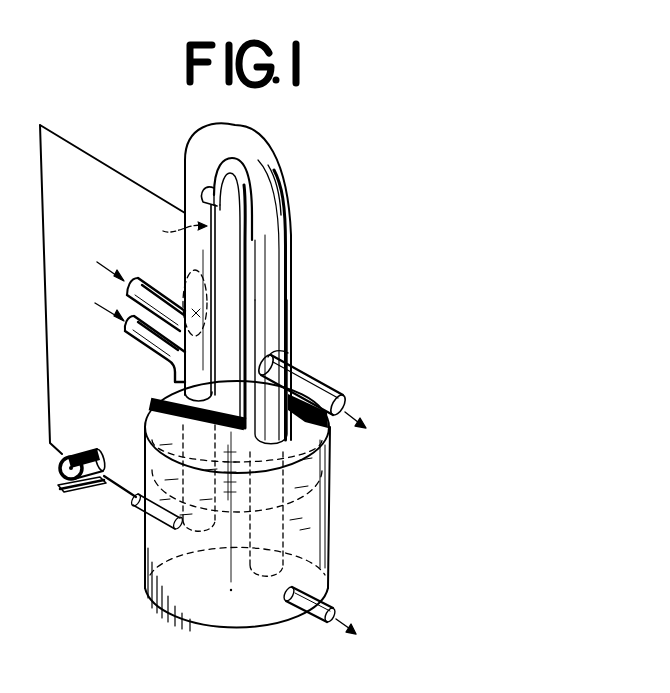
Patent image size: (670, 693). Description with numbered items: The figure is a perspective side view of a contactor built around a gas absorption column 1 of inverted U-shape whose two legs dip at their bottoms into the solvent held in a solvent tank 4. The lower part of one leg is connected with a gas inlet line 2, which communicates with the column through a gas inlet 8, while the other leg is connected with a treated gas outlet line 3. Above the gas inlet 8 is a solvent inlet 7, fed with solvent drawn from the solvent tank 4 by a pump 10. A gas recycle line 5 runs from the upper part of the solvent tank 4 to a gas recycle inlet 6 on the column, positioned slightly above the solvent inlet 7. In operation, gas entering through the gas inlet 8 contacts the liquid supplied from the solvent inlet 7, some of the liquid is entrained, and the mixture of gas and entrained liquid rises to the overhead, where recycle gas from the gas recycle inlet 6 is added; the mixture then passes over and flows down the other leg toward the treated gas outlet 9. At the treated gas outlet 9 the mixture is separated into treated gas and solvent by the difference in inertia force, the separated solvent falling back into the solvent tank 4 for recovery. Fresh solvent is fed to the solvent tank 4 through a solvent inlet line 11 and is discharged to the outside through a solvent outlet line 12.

The gas absorption column 1 is at (253, 150).
The gas inlet line 2 is at (131, 290).
The treated gas outlet line 3 is at (318, 378).
The solvent tank 4 is at (326, 519).
The gas recycle line 5 is at (246, 228).
The gas recycle inlet 6 is at (205, 190).
The solvent inlet 7 is at (178, 229).
The gas inlet 8 is at (189, 281).
The treated gas outlet 9 is at (284, 354).
The pump 10 is at (90, 489).
The solvent inlet line 11 is at (158, 350).
The solvent outlet line 12 is at (328, 599).